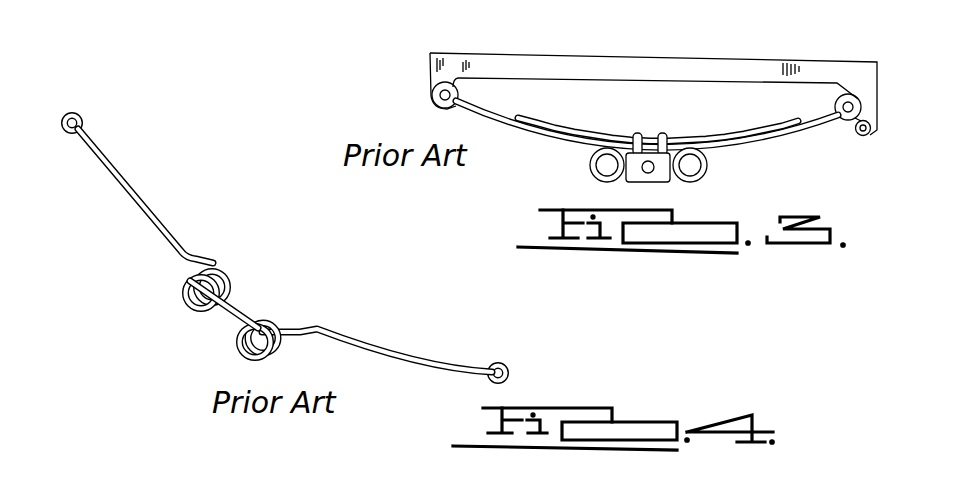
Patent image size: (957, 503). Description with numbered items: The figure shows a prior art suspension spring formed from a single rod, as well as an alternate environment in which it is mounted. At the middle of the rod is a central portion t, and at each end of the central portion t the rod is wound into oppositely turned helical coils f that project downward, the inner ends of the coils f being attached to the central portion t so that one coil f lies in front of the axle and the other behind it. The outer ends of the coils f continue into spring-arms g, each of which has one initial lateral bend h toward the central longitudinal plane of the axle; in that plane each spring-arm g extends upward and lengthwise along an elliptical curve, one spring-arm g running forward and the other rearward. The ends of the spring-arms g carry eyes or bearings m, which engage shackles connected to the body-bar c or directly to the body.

In FIG. 3, the body-bar c is at (642, 56).
In FIG. 4, the eyes or bearings m is at (84, 114).
In FIG. 4, the spring-arms g is at (112, 187).
In FIG. 4, the lateral bend h is at (203, 257).
In FIG. 4, the central portion t is at (250, 296).
In FIG. 4, the helical coils f is at (237, 336).